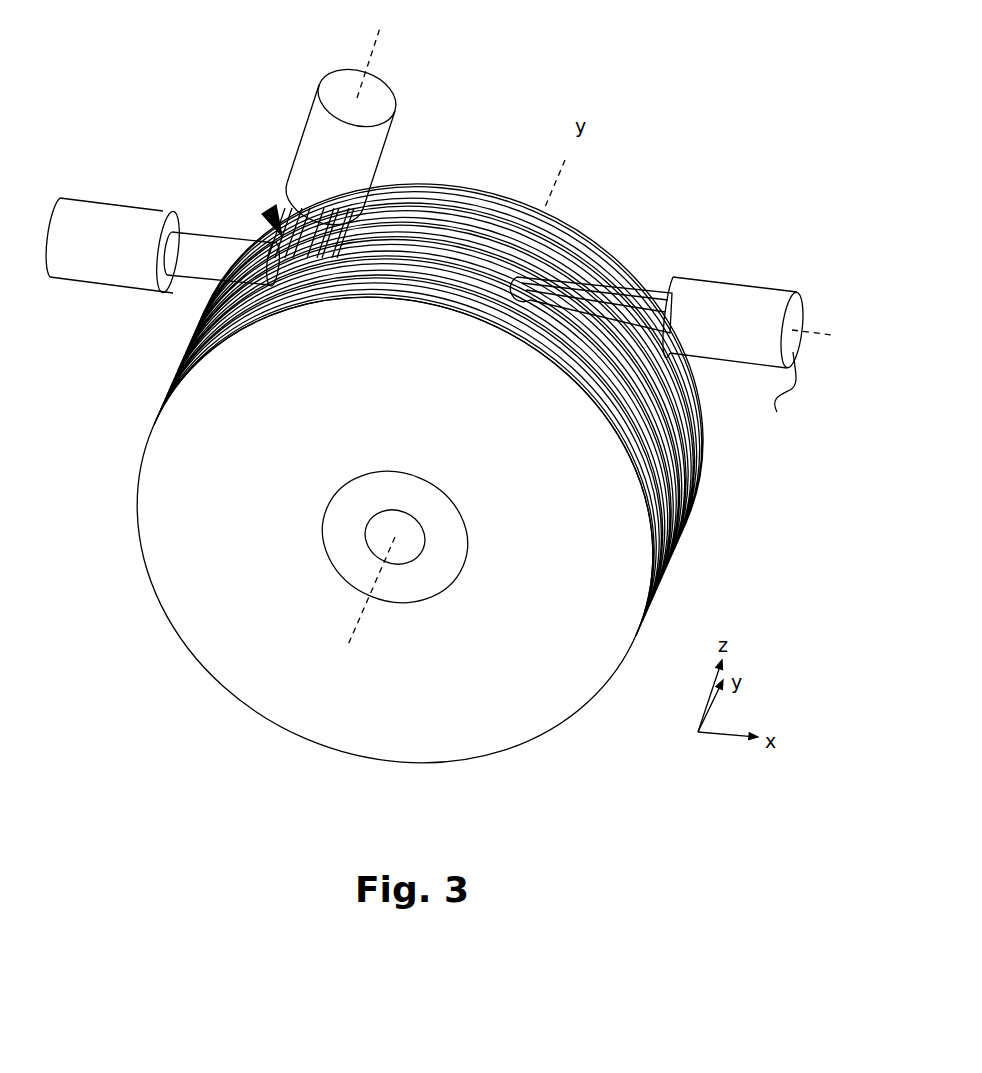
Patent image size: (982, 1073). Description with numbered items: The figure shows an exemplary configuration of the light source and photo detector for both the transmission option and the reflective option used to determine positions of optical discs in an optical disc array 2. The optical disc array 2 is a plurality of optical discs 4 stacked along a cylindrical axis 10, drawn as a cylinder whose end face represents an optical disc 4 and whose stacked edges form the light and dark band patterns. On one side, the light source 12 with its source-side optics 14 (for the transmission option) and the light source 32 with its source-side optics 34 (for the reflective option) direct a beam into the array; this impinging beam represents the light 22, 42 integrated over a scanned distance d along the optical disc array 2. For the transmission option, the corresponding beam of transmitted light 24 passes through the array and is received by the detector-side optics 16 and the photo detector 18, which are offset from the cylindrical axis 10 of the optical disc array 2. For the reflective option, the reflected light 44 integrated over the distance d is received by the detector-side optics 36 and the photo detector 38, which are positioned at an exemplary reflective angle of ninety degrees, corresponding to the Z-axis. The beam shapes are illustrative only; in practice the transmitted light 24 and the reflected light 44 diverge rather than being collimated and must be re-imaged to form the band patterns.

The optical disc array 2 is at (688, 520).
The optical discs 4 is at (472, 728).
The cylindrical axis 10 is at (357, 623).
The light source 12 is at (114, 203).
The source-side optics 14 is at (114, 203).
The light source 32 is at (114, 203).
The source-side optics 34 is at (92, 215).
The light 22 is at (222, 244).
The light 42 is at (233, 252).
The detector-side optics 36 is at (311, 113).
The photo detector 38 is at (317, 125).
The reflected light 44 is at (288, 198).
The transmitted light 24 is at (662, 296).
The detector-side optics 16 is at (747, 321).
The photo detector 18 is at (763, 298).